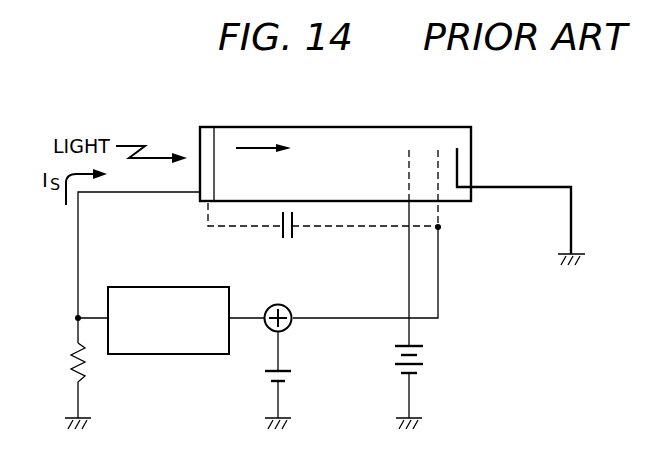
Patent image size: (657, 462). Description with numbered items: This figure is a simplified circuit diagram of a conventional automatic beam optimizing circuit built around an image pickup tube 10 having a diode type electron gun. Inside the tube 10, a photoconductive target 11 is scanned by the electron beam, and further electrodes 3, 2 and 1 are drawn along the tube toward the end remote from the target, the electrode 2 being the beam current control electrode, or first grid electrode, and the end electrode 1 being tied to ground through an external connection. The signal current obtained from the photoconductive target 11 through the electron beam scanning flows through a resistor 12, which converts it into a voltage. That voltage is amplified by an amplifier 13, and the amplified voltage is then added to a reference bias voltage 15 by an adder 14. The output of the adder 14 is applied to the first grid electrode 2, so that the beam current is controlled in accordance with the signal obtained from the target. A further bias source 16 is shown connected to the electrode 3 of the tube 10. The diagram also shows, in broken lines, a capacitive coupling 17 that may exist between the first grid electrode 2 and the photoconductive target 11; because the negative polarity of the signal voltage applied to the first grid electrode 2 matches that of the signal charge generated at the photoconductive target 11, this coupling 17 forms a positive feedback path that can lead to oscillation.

The collector electrode 1 is at (457, 148).
The first grid electrode 2 is at (438, 150).
The third electrode 3 is at (409, 150).
The image pickup tube 10 is at (336, 127).
The photoconductive target 11 is at (209, 127).
The resistor 12 is at (71, 362).
The amplifier 13 is at (190, 285).
The adder 14 is at (291, 307).
The reference bias voltage 15 is at (292, 378).
The bias battery 16 is at (425, 360).
The capacitive coupling 17 is at (302, 240).